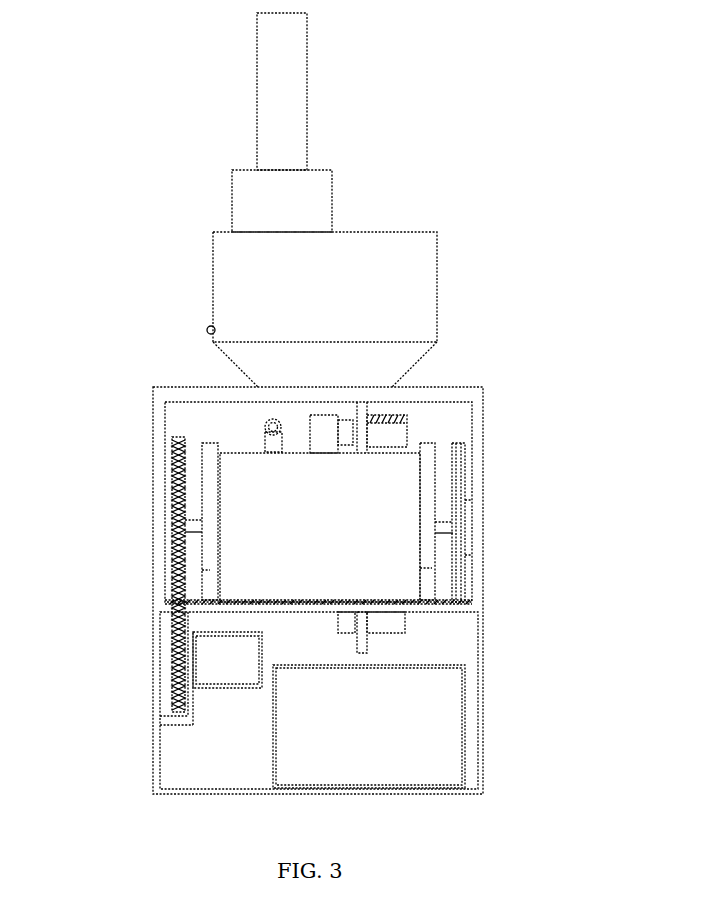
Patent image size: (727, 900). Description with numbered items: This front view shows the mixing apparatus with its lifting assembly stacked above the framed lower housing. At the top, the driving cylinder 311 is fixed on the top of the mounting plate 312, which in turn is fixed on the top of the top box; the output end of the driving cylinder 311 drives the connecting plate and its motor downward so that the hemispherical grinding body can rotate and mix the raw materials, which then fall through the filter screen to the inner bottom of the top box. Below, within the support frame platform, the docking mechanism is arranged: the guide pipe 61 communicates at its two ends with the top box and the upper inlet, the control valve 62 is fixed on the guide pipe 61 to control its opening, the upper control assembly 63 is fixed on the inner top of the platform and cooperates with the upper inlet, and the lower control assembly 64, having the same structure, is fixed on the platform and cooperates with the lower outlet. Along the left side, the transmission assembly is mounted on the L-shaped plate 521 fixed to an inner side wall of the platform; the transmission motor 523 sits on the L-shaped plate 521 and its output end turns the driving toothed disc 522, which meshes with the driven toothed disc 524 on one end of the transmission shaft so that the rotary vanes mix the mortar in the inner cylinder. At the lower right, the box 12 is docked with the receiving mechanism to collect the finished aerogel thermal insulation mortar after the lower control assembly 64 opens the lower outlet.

The driving cylinder 311 is at (288, 110).
The mounting plate 312 is at (302, 207).
The guide pipe 61 is at (325, 435).
The control valve 62 is at (325, 413).
The upper control assembly 63 is at (382, 430).
The lower control assembly 64 is at (375, 627).
The box 12 is at (433, 743).
The L-shaped plate 521 is at (190, 715).
The driving toothed disc 522 is at (183, 662).
The transmission motor 523 is at (242, 650).
The driven toothed disc 524 is at (183, 518).